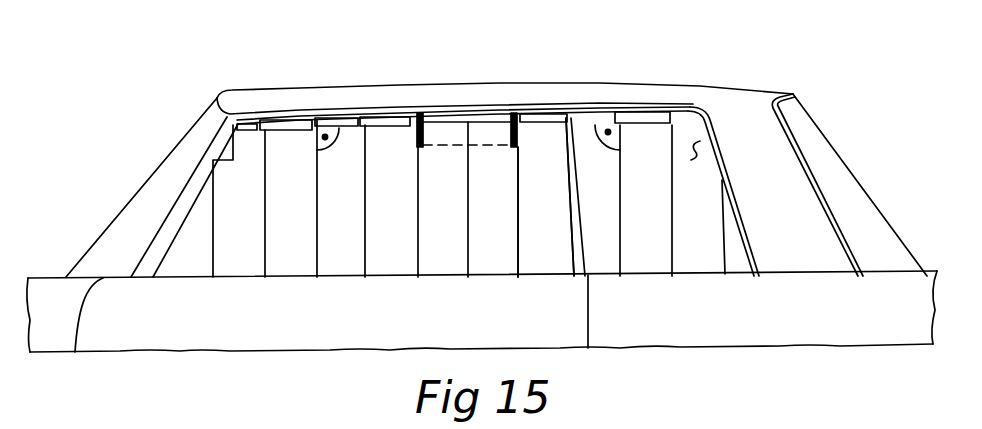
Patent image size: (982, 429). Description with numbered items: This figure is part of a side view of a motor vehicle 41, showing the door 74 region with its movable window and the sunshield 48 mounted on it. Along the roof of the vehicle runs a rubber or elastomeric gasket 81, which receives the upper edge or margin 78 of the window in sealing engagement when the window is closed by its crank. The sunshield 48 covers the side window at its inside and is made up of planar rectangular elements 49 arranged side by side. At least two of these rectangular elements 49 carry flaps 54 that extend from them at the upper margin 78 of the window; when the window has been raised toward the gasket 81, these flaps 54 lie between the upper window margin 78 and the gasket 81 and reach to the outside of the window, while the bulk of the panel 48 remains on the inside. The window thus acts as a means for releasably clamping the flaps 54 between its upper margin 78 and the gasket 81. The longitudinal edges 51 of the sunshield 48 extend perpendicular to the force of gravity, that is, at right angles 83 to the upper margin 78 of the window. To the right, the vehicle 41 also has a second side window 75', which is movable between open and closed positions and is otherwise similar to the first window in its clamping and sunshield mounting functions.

The motor vehicle 41 is at (182, 352).
The sunshield 48 is at (530, 143).
The planar rectangular elements 49 is at (457, 233).
The longitudinal edges 51 is at (418, 233).
The flaps 54 is at (277, 130).
The door 74 is at (305, 332).
The second side window 75' is at (723, 166).
The upper margin 78 is at (481, 117).
The gasket 81 is at (335, 117).
The right angles 83 is at (338, 148).